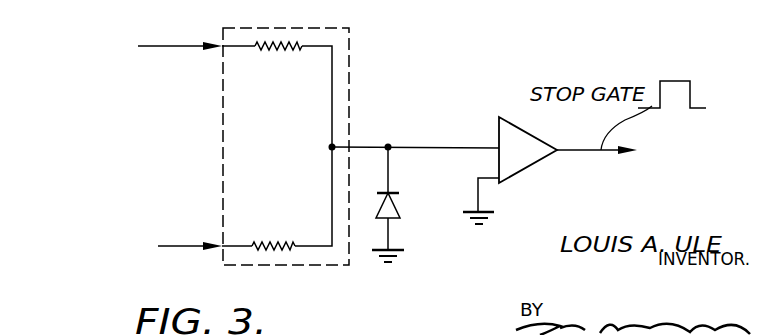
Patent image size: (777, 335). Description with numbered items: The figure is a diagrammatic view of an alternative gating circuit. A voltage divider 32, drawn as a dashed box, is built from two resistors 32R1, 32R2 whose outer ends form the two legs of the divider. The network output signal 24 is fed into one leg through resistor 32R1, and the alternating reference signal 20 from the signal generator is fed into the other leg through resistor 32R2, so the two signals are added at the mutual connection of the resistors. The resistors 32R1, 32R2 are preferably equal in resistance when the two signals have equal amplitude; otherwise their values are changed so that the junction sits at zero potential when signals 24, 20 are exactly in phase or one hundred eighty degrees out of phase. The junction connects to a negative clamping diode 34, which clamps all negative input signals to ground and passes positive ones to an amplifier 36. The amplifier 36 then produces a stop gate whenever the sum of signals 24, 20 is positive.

The alternating signal 20 is at (124, 244).
The network output signal 24 is at (123, 44).
The voltage divider 32 is at (351, 77).
The resistor 32R1 is at (283, 55).
The resistor 32R2 is at (282, 228).
The negative clamping diode 34 is at (398, 213).
The amplifier 36 is at (534, 166).